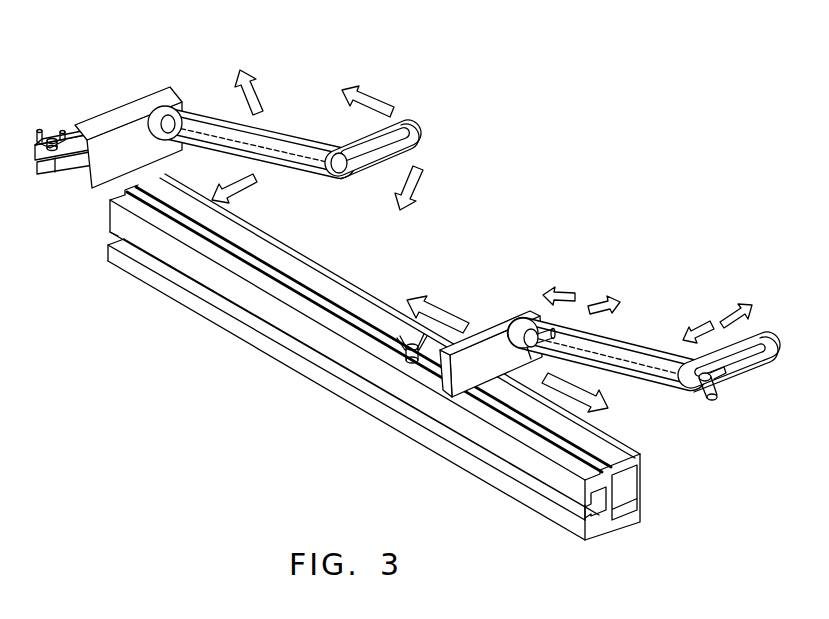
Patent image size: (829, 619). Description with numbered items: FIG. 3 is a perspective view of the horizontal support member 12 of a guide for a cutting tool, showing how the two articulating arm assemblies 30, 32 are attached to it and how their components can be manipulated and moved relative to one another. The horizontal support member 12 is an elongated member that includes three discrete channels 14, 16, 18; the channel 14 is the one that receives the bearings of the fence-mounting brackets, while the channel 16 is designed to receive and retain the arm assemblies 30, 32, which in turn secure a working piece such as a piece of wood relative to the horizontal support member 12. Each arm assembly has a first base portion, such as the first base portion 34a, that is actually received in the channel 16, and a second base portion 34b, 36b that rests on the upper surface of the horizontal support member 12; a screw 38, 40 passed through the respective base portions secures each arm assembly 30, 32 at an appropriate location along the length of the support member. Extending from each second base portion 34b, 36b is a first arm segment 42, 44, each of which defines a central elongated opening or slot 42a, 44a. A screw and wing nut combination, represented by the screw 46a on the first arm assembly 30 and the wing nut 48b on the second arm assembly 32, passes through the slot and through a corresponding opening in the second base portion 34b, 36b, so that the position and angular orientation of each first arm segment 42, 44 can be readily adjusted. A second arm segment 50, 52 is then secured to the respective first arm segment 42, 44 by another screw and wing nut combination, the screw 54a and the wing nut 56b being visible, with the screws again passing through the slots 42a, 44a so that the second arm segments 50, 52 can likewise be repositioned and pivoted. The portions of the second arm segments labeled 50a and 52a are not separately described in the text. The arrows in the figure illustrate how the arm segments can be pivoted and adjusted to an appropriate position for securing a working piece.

The horizontal support member 12 is at (622, 528).
The channel 14 is at (603, 540).
The channel 16 is at (592, 508).
The channel 18 is at (628, 487).
The arm assembly 30 is at (197, 70).
The arm assembly 32 is at (677, 262).
The first base portion 34a is at (42, 173).
The second base portion 34b is at (127, 122).
The second base portion 36b is at (488, 333).
The screw 38 is at (40, 133).
The screw 40 is at (402, 340).
The first arm segment 42 is at (253, 152).
The central elongated opening or slot 42a is at (283, 152).
The first arm segment 44 is at (606, 345).
The central elongated opening or slot 44a is at (633, 358).
The screw 46a is at (173, 122).
The wing nut 48b is at (510, 328).
The second arm segment 50 is at (401, 135).
The first link end 50a is at (420, 138).
The second arm segment 52 is at (729, 343).
The second link end 52a is at (768, 385).
The screw 54a is at (343, 172).
The wing nut 56b is at (702, 394).